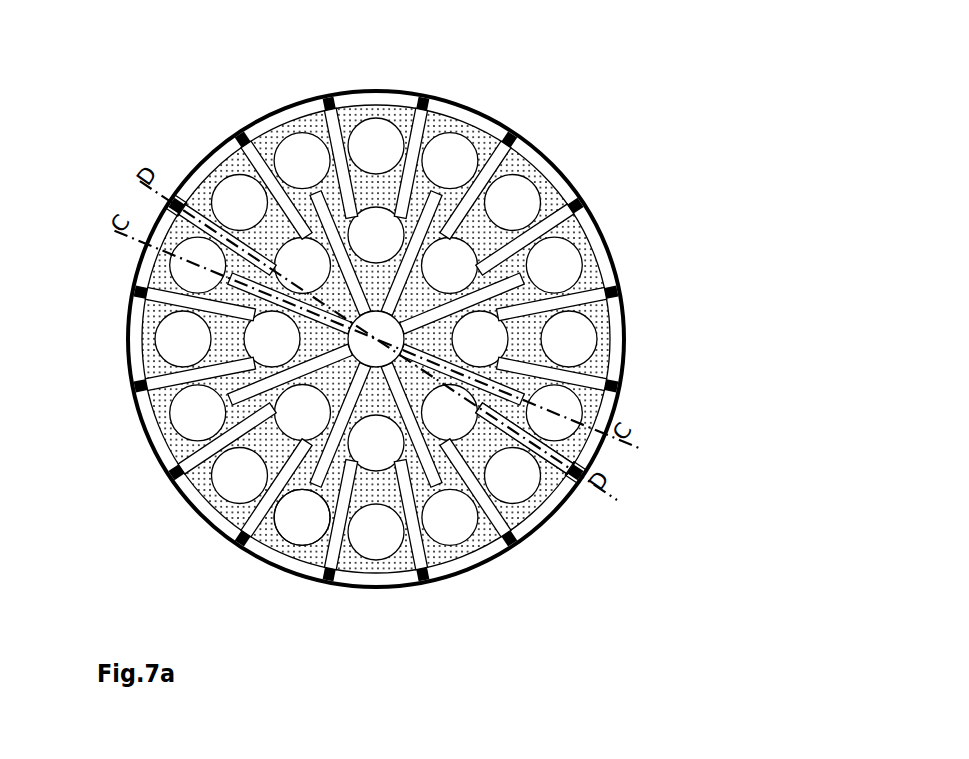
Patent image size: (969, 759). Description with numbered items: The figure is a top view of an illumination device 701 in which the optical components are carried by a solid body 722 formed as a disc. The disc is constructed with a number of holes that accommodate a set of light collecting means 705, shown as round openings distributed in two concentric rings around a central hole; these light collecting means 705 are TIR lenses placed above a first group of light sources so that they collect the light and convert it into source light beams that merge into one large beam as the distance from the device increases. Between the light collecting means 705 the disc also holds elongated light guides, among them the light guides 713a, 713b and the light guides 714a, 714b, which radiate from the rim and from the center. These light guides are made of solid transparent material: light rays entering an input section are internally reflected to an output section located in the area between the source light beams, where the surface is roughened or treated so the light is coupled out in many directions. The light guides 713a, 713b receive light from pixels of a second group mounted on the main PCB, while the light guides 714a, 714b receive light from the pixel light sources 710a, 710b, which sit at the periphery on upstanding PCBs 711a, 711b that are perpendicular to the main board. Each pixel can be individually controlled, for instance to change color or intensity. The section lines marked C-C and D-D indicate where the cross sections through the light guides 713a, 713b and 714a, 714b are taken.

The illumination device 701 is at (590, 82).
The light collecting means 705 is at (510, 213).
The pixel light source 710a is at (178, 203).
The pixel light source 710b is at (577, 469).
The upstanding PCB 711a is at (172, 208).
The upstanding PCB 711b is at (583, 482).
The light guide 713a is at (253, 363).
The light guide 713b is at (482, 407).
The light guide 714a is at (194, 220).
The light guide 714b is at (560, 492).
The solid body 722 is at (300, 530).